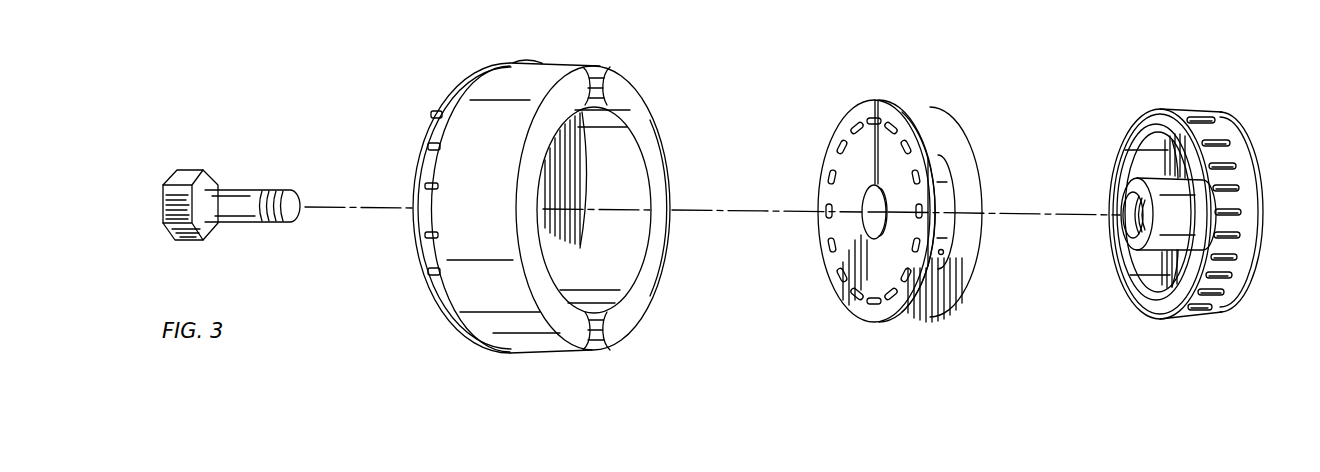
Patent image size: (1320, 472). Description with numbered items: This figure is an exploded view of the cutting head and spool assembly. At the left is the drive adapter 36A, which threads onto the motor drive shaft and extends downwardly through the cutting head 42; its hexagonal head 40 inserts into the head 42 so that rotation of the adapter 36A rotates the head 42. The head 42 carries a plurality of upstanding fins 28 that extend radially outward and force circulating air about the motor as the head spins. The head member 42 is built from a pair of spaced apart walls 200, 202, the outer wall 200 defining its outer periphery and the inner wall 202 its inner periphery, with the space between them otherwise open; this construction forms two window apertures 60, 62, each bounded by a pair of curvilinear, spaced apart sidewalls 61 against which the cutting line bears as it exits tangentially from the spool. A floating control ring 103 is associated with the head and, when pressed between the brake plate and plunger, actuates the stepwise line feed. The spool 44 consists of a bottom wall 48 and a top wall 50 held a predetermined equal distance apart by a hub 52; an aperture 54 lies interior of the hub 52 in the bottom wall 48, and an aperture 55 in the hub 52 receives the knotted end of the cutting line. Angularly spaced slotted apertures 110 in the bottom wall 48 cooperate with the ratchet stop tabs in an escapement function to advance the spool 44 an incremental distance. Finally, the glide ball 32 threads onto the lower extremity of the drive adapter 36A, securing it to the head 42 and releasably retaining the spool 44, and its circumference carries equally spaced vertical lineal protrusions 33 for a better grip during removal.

The drive adapter 36A is at (226, 207).
The hexagonal head 40 is at (183, 238).
The cutting head 42 is at (537, 210).
The control ring 103 is at (425, 278).
The outer wall 200 is at (481, 92).
The upstanding fins 28 is at (443, 148).
The inner wall 202 is at (620, 210).
The window aperture 60 is at (597, 70).
The sidewalls 61 is at (610, 88).
The window aperture 62 is at (593, 337).
The spool 44 is at (897, 192).
The bottom wall 48 is at (876, 210).
The slotted apertures 110 is at (902, 133).
The aperture 54 is at (862, 223).
The top wall 50 is at (958, 307).
The hub 52 is at (981, 203).
The aperture 55 is at (950, 252).
The glide ball 32 is at (1210, 212).
The vertical lineal protrusions 33 is at (1227, 240).